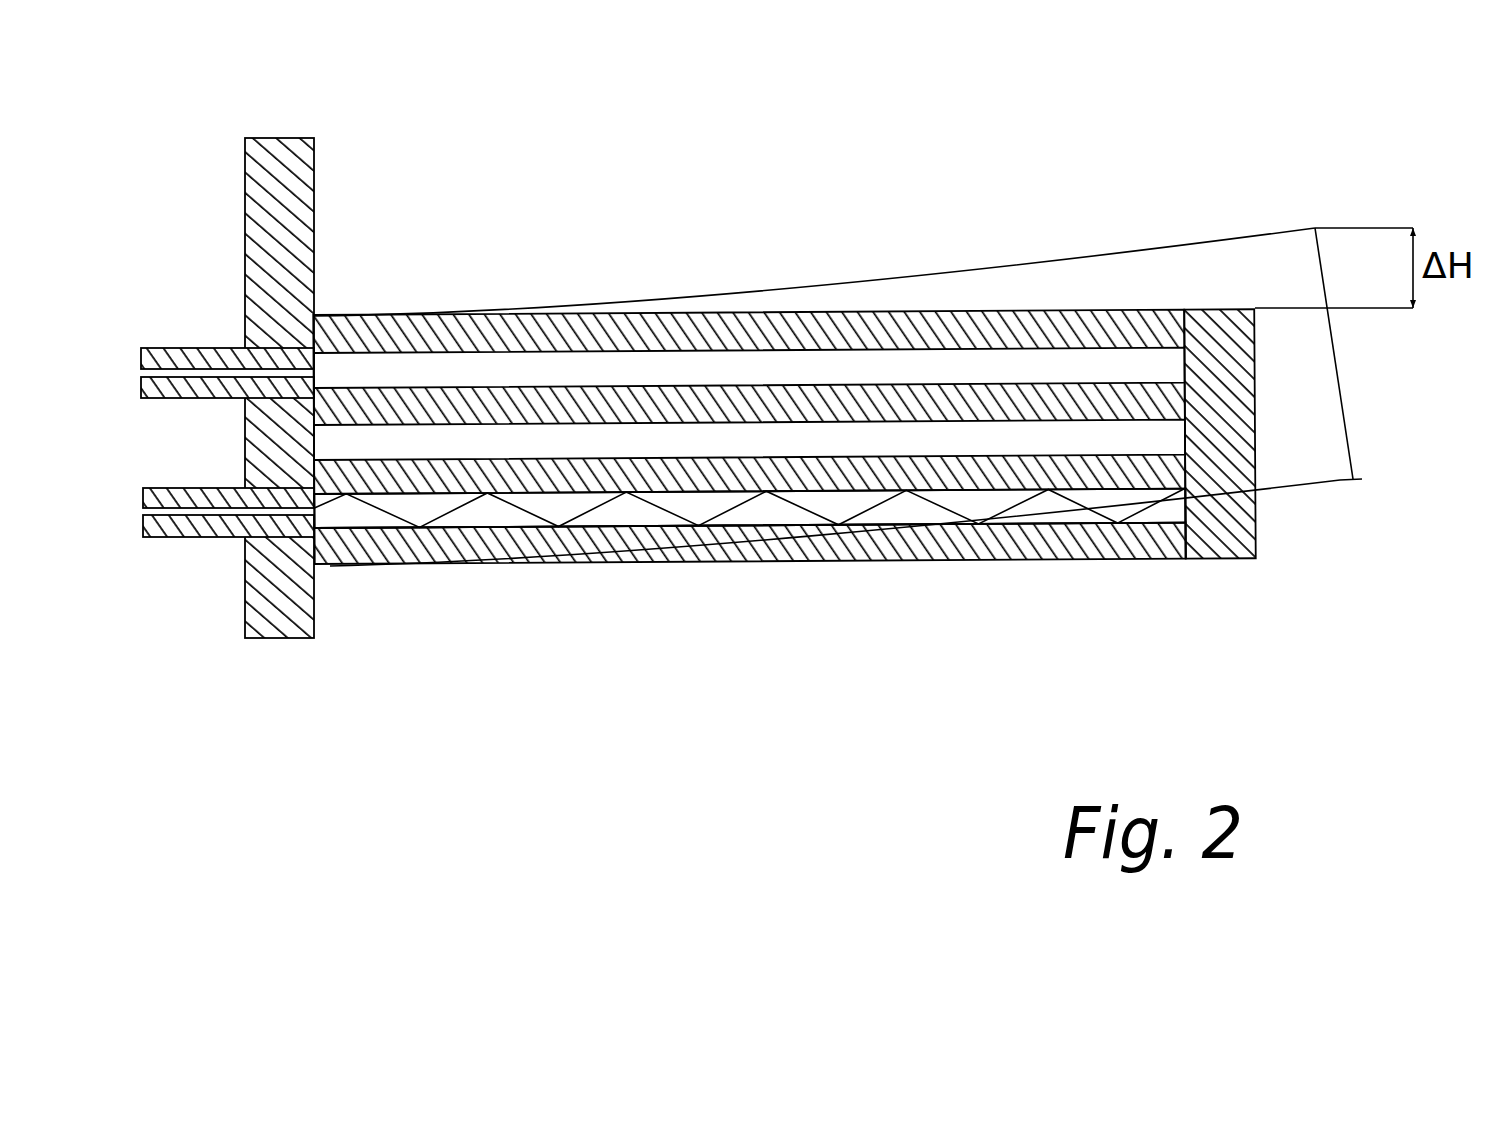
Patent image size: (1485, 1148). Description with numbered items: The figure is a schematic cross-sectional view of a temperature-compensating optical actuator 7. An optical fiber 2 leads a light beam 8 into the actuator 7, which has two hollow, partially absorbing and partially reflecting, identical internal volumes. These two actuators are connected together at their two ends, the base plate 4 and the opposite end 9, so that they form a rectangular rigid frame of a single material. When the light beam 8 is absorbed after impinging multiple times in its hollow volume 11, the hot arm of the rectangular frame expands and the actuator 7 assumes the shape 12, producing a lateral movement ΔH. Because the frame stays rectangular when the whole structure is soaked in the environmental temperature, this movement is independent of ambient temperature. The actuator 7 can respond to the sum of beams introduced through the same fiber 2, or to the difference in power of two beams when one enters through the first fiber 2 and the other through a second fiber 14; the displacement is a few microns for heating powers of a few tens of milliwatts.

The optical fiber 2 is at (200, 515).
The base plate 4 is at (267, 590).
The optical actuator 7 is at (607, 542).
The light beam 8 is at (780, 497).
The opposite end 9 is at (1369, 393).
The hollow volume 11 is at (485, 517).
The shape 12 is at (1327, 462).
The second fiber 14 is at (201, 368).